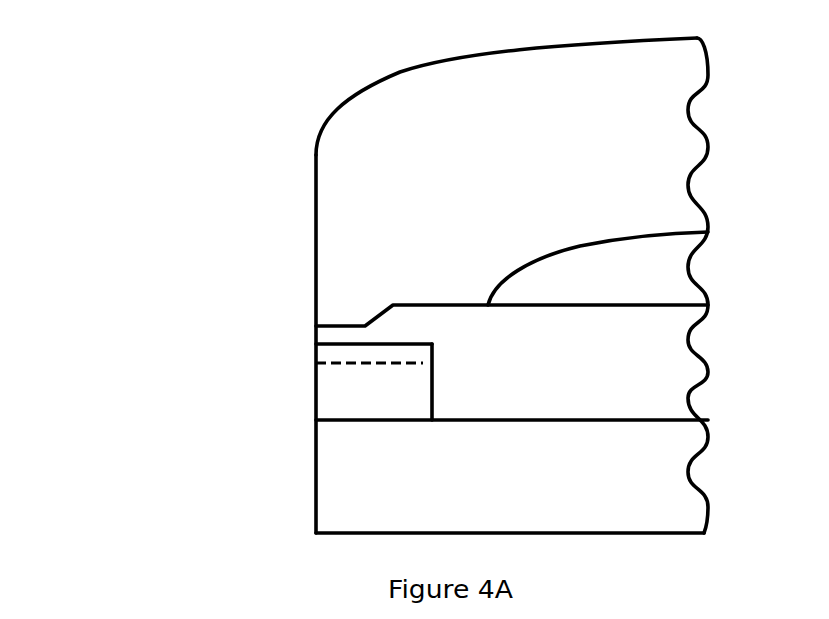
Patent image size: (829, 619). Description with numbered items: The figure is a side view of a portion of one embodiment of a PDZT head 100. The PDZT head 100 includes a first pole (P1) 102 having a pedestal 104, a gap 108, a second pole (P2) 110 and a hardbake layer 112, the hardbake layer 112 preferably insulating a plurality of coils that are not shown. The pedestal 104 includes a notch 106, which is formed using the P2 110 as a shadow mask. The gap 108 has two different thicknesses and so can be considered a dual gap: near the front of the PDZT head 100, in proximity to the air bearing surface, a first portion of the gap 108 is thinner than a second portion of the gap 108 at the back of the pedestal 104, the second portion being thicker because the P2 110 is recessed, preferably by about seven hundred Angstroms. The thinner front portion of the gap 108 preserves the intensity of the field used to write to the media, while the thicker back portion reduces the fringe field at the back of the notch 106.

The PDZT head 100 is at (472, 36).
The first pole (P1) 102 is at (125, 345).
The pedestal 104 is at (220, 347).
The notch 106 is at (316, 357).
The gap 108 is at (316, 337).
The second pole (P2) 110 is at (316, 252).
The hardbake layer 112 is at (708, 290).